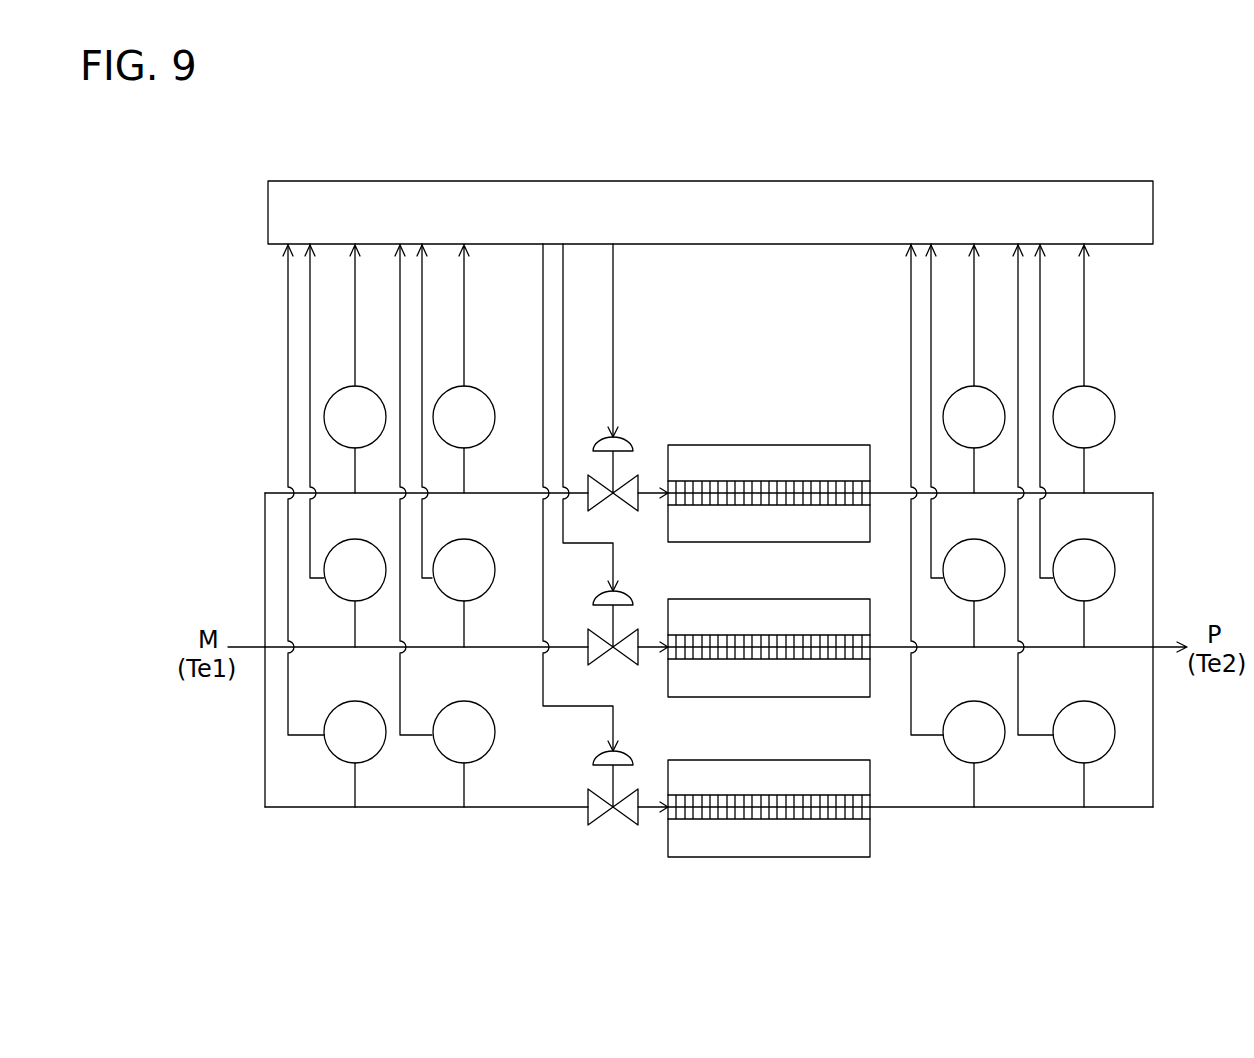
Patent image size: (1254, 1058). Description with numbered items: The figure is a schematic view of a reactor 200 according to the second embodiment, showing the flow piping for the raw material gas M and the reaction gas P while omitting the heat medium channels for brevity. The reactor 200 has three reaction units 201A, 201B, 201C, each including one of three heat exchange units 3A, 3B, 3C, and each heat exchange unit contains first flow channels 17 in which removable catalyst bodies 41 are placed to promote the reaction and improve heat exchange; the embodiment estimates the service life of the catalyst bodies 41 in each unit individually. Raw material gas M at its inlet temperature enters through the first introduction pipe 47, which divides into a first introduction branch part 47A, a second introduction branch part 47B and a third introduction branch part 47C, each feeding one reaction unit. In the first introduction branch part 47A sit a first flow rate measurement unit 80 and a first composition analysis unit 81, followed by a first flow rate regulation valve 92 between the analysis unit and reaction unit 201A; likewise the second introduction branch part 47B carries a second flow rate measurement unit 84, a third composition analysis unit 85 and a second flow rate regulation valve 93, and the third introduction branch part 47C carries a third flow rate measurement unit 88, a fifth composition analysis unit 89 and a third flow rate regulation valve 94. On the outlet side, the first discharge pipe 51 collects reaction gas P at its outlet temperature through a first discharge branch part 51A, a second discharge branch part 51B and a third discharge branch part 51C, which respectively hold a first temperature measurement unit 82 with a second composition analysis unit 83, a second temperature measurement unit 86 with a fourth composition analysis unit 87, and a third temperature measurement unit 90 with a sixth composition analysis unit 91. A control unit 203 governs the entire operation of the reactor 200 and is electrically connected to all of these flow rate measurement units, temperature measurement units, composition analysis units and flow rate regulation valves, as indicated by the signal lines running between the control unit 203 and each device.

The reactor 200 is at (223, 147).
The control unit 203 is at (802, 181).
The first flow rate measurement unit 80 is at (370, 384).
The first composition analysis unit 81 is at (479, 384).
The first temperature measurement unit 82 is at (990, 388).
The second composition analysis unit 83 is at (1102, 388).
The second flow rate measurement unit 84 is at (370, 541).
The third composition analysis unit 85 is at (483, 541).
The second temperature measurement unit 86 is at (990, 542).
The fourth composition analysis unit 87 is at (1102, 542).
The third flow rate measurement unit 88 is at (370, 704).
The fifth composition analysis unit 89 is at (483, 704).
The third temperature measurement unit 90 is at (990, 705).
The sixth composition analysis unit 91 is at (1107, 705).
The first flow rate regulation valve 92 is at (602, 500).
The second flow rate regulation valve 93 is at (602, 654).
The third flow rate regulation valve 94 is at (602, 814).
The heat exchange unit 3A is at (708, 445).
The heat exchange unit 3B is at (708, 599).
The heat exchange unit 3C is at (708, 760).
The catalyst bodies 41 is at (744, 491).
The first flow channels 17 is at (812, 507).
The first introduction pipe 47 is at (246, 645).
The first introduction branch part 47A is at (515, 491).
The second introduction branch part 47B is at (515, 645).
The third introduction branch part 47C is at (515, 805).
The first discharge pipe 51 is at (1163, 650).
The first discharge branch part 51A is at (1137, 491).
The second discharge branch part 51B is at (1128, 645).
The third discharge branch part 51C is at (1128, 805).
The reaction unit 201A is at (788, 456).
The reaction unit 201B is at (788, 621).
The reaction unit 201C is at (788, 779).